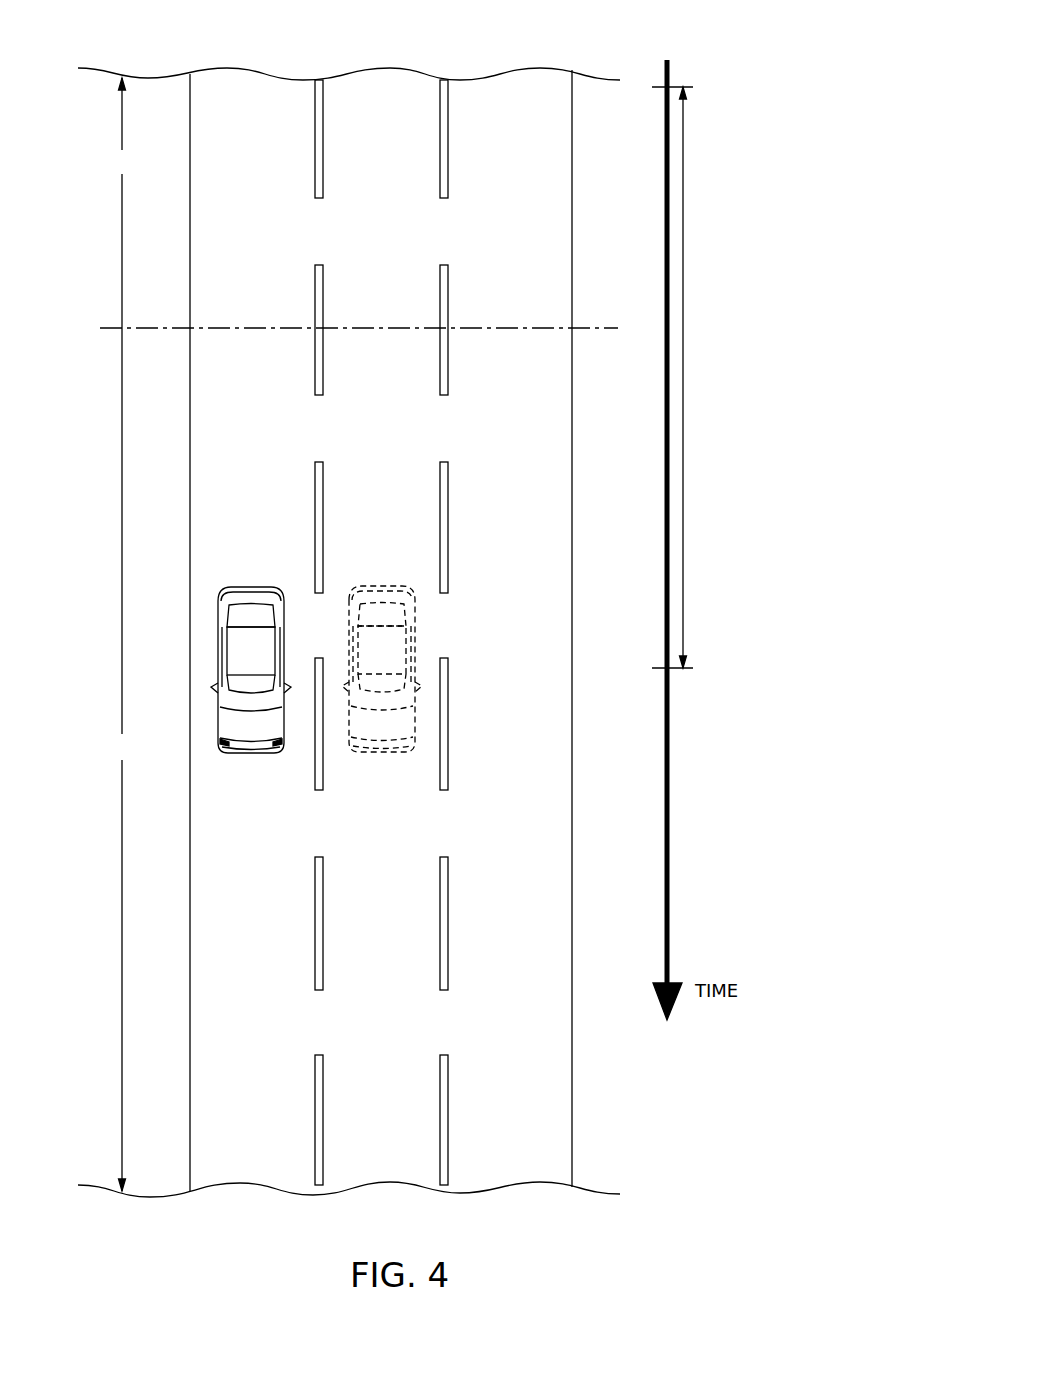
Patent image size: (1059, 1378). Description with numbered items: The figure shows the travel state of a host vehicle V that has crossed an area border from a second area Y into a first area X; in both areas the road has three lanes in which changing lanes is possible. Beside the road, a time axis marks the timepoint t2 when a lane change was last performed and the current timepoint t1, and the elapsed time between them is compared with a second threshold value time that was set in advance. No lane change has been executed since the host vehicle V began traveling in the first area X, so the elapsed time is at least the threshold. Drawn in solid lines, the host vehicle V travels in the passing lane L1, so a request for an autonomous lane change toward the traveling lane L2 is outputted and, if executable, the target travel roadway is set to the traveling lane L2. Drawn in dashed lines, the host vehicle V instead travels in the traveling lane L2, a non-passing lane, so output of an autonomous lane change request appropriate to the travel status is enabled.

The host vehicle V is at (222, 592).
The passing lane L1 is at (236, 827).
The traveling lane L2 is at (386, 918).
The second area Y is at (122, 203).
The first area X is at (122, 759).
The current timepoint t1 is at (758, 670).
The timepoint when a lane change was last performed t2 is at (753, 84).